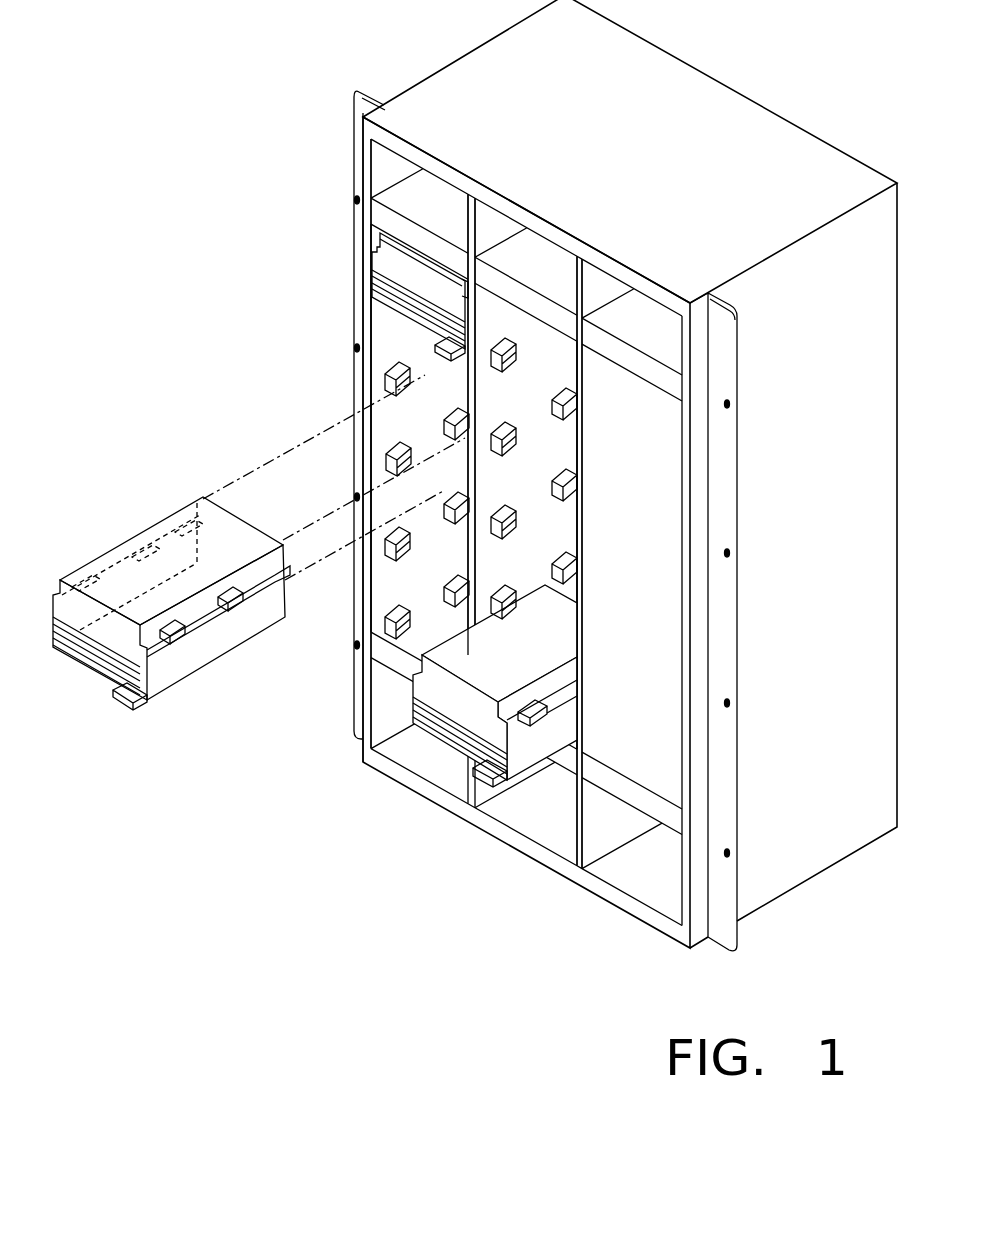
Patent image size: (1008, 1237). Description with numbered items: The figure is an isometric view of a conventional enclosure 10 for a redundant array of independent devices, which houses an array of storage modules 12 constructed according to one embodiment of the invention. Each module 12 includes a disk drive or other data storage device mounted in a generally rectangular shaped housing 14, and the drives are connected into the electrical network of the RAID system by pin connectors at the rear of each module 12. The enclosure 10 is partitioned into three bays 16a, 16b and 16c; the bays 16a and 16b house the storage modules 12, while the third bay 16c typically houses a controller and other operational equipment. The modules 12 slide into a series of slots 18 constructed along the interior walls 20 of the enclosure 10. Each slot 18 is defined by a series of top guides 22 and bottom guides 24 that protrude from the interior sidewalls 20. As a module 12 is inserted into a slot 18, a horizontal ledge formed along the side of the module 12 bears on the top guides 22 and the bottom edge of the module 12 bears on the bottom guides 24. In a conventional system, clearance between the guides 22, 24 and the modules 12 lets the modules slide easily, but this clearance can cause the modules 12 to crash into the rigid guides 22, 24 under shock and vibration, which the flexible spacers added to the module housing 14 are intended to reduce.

The enclosure 10 is at (722, 98).
The storage module 12 is at (341, 510).
The housing 14 is at (233, 637).
The bay 16a is at (407, 337).
The bay 16b is at (537, 370).
The third bay 16c is at (642, 413).
The slot 18 is at (383, 430).
The interior wall 20 is at (368, 320).
The top guide 22 is at (462, 443).
The bottom guide 24 is at (410, 366).